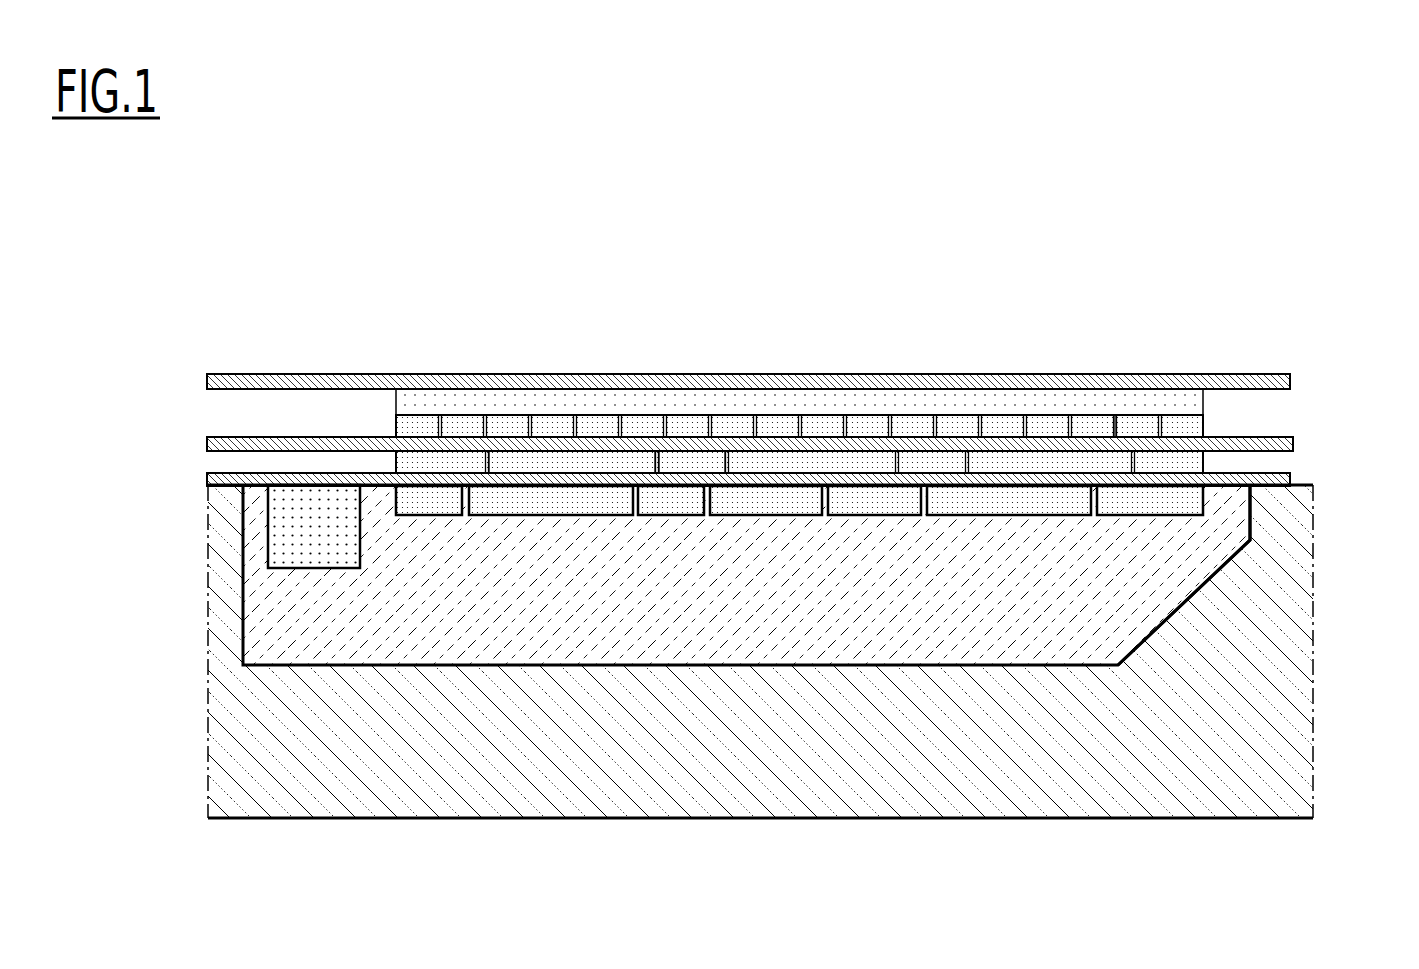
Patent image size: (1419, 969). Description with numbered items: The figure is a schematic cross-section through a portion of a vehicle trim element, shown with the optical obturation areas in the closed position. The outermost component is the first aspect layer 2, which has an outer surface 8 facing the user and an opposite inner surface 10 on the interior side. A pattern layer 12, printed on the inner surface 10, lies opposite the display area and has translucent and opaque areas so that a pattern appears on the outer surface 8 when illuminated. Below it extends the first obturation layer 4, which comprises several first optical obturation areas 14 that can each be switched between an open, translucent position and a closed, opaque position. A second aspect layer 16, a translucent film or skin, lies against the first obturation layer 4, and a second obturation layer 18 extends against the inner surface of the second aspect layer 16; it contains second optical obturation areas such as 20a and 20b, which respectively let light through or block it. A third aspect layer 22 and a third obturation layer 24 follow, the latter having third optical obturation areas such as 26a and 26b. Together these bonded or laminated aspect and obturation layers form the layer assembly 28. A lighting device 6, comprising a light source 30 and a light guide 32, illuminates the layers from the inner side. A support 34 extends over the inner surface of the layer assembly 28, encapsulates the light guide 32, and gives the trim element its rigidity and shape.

The first aspect layer 2 is at (1237, 374).
The first obturation layer 4 is at (1192, 430).
The lighting device 6 is at (1182, 569).
The outer surface 8 is at (766, 385).
The inner surface 10 is at (311, 388).
The pattern layer 12 is at (922, 406).
The first optical obturation area 14 is at (592, 421).
The second aspect layer 16 is at (226, 447).
The second obturation layer 18 is at (503, 462).
The second optical obturation area in open position 20a is at (640, 457).
The second optical obturation area in closed position 20b is at (700, 457).
The third aspect layer 22 is at (1280, 472).
The third obturation layer 24 is at (1003, 498).
The third optical obturation area in open position 26a is at (548, 497).
The third optical obturation area in closed position 26b is at (673, 497).
The layer assembly 28 is at (1378, 375).
The light source 30 is at (295, 532).
The light guide 32 is at (407, 622).
The support 34 is at (805, 770).